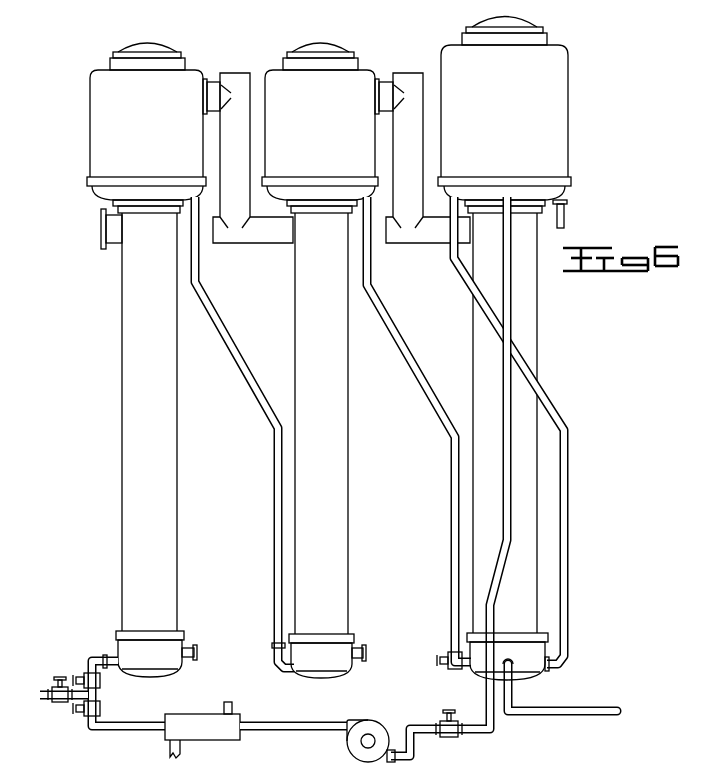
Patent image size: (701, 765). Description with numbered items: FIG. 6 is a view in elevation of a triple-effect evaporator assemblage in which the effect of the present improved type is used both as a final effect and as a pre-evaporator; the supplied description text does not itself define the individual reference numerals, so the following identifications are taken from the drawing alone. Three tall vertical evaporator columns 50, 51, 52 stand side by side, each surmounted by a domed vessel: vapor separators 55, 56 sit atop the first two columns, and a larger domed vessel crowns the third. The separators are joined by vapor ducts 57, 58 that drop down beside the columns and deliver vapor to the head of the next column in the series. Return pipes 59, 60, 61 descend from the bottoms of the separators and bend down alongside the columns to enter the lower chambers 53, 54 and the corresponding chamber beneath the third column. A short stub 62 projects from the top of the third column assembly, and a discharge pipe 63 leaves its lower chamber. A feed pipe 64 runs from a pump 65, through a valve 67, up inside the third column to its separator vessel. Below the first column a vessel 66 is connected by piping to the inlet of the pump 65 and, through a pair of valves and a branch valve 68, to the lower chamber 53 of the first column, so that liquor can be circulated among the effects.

The first column 50 is at (139, 420).
The second column 51 is at (321, 423).
The third column 52 is at (483, 366).
The bottom chamber of first column 53 is at (184, 670).
The bottom chamber of second column 54 is at (292, 673).
The first separator vessel 55 is at (146, 128).
The second separator vessel 56 is at (320, 128).
The vapor duct 57 is at (245, 238).
The vapor duct 58 is at (425, 239).
The liquid return pipe 59 is at (241, 368).
The liquid return pipe 60 is at (428, 397).
The liquid return pipe 61 is at (568, 421).
The outlet stub 62 is at (566, 215).
The discharge pipe 63 is at (579, 715).
The feed pipe 64 is at (511, 527).
The pump 65 is at (378, 729).
The heater 66 is at (256, 730).
The valve 67 is at (447, 720).
The inlet valve 68 is at (58, 692).